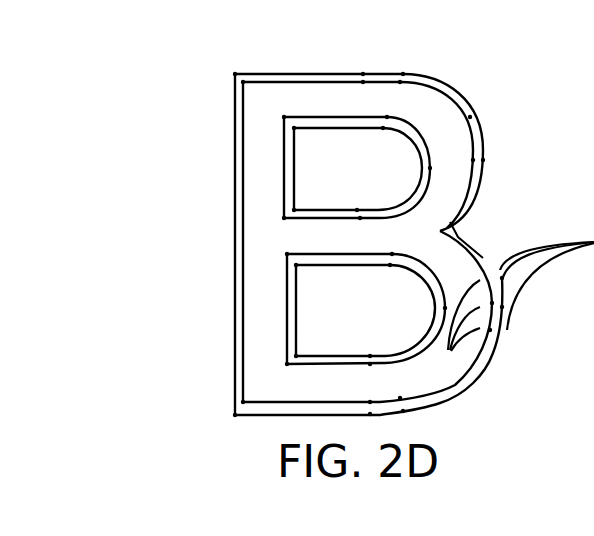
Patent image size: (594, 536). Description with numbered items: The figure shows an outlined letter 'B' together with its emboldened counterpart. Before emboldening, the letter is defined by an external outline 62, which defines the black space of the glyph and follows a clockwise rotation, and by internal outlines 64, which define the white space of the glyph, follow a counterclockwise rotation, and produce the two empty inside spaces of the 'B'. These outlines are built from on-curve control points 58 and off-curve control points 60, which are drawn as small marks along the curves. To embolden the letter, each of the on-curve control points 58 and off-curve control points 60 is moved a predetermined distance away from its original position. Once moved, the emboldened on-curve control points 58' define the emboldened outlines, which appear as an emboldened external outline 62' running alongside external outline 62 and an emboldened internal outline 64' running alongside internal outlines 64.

The external outline 62 is at (368, 215).
The emboldened external outline 62' is at (380, 213).
The on-curve control points 58 is at (364, 226).
The emboldened on-curve control points 58' is at (364, 310).
The internal outlines 64 is at (232, 265).
The emboldened internal outline 64' is at (357, 169).
The off-curve control points 60 is at (512, 308).